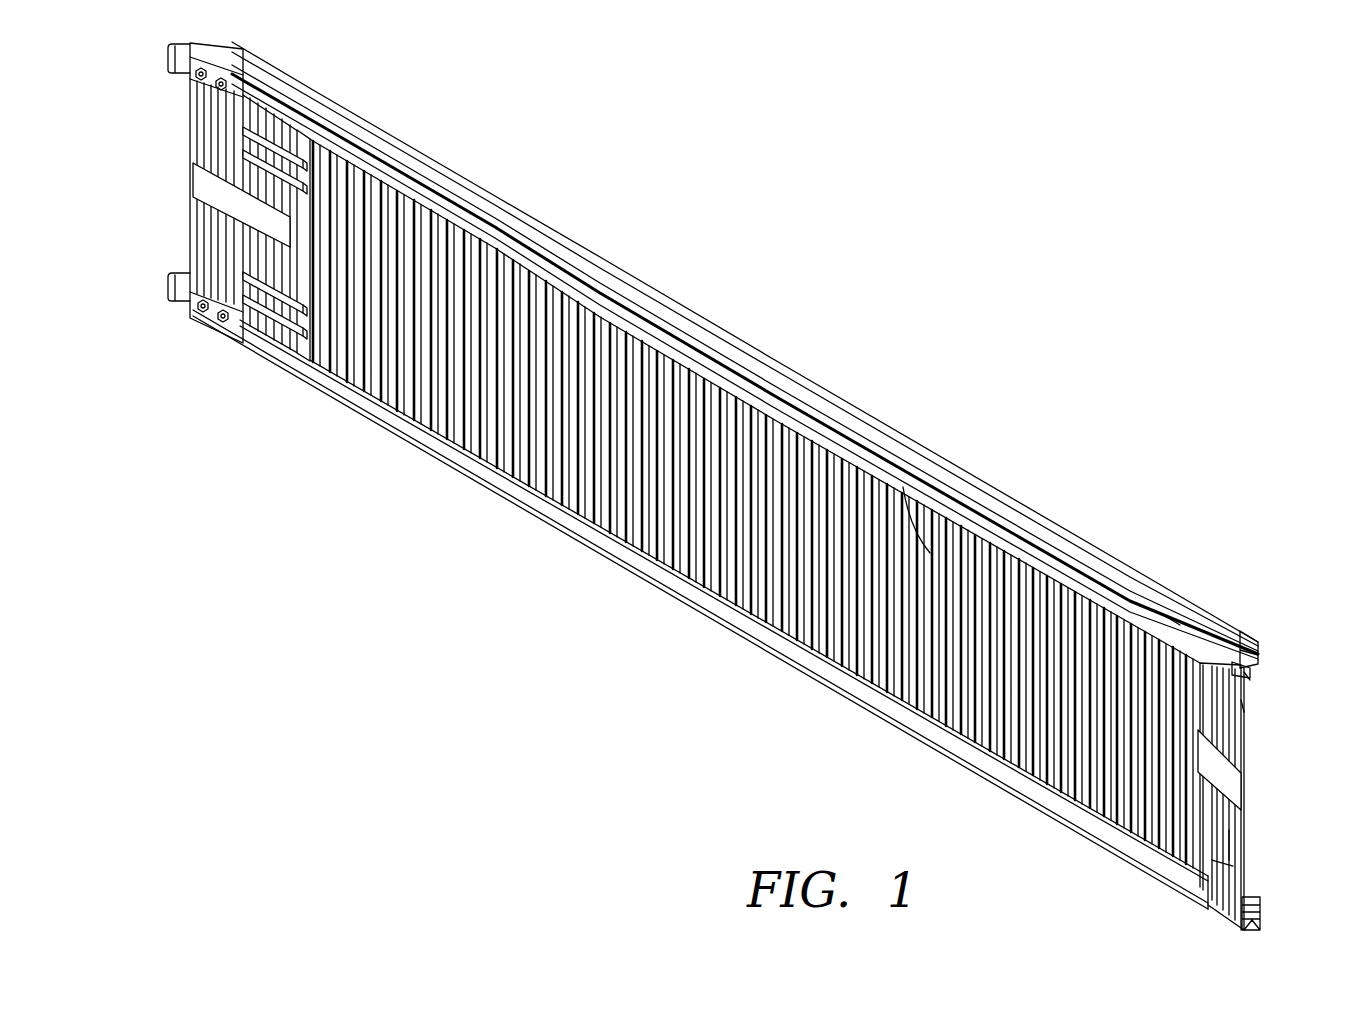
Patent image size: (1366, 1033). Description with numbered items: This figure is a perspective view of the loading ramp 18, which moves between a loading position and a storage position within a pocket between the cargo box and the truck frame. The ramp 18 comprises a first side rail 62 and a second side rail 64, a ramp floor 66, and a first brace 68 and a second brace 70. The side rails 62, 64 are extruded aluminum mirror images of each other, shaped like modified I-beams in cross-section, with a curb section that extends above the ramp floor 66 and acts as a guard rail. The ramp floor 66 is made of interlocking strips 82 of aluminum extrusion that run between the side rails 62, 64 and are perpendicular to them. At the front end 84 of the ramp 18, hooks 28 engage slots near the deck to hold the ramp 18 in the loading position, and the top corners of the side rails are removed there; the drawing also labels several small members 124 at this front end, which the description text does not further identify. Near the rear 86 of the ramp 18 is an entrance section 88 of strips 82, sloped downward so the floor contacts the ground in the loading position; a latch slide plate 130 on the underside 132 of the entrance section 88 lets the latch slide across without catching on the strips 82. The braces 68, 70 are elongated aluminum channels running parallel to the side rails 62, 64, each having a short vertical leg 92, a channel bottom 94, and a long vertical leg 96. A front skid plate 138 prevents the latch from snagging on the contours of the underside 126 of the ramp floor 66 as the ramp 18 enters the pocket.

The loading ramp 18 is at (734, 486).
The hooks 28 is at (172, 62).
The first side rail 62 is at (1232, 640).
The second side rail 64 is at (1250, 897).
The ramp floor 66 is at (862, 645).
The first brace 68 is at (805, 422).
The second brace 70 is at (305, 367).
The interlocking strips 82 is at (655, 555).
The front end of the ramp 84 is at (190, 98).
The rear of the ramp 86 is at (1245, 740).
The entrance section 88 is at (1233, 840).
The short vertical leg 92 is at (1170, 620).
The channel bottom 94 is at (1245, 707).
The long vertical leg 96 is at (1250, 677).
The mounting bars 124 is at (250, 277).
The underside of the ramp floor 126 is at (903, 487).
The latch slide plate 130 is at (1235, 797).
The underside of the entrance section 132 is at (1233, 865).
The front skid plate 138 is at (205, 185).